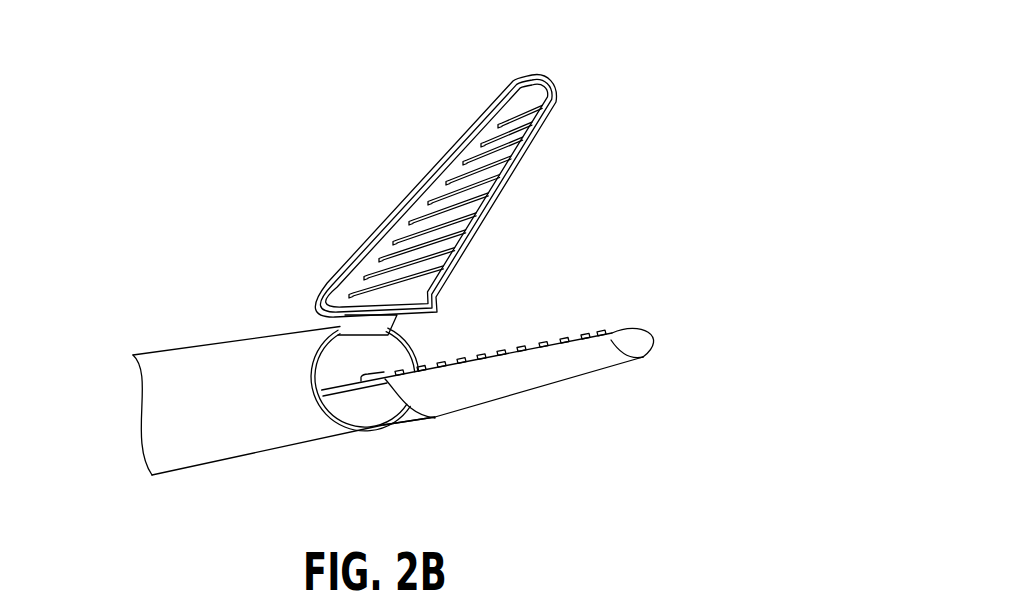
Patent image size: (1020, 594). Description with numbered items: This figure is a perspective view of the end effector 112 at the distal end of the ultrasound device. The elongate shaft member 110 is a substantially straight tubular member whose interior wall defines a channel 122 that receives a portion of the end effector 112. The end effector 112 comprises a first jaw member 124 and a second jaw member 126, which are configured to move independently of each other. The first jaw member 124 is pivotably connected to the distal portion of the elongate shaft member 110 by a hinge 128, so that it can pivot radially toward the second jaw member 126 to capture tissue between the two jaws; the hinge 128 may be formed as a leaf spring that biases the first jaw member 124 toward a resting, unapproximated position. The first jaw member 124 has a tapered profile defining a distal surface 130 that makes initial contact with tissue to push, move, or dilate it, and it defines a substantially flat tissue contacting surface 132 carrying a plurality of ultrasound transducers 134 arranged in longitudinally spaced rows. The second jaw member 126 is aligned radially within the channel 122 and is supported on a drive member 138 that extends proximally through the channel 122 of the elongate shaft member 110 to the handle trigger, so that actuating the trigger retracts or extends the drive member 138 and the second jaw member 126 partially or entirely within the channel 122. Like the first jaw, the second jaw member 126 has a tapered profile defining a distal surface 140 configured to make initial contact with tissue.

The elongate shaft member 110 is at (170, 336).
The end effector 112 is at (343, 93).
The channel 122 is at (335, 363).
The first jaw member 124 is at (454, 171).
The second jaw member 126 is at (536, 413).
The hinge 128 is at (398, 318).
The distal surface 130 is at (535, 82).
The tissue contacting surface 132 is at (527, 232).
The ultrasound transducers 134 is at (517, 152).
The drive member 138 is at (387, 412).
The distal surface 140 is at (662, 333).